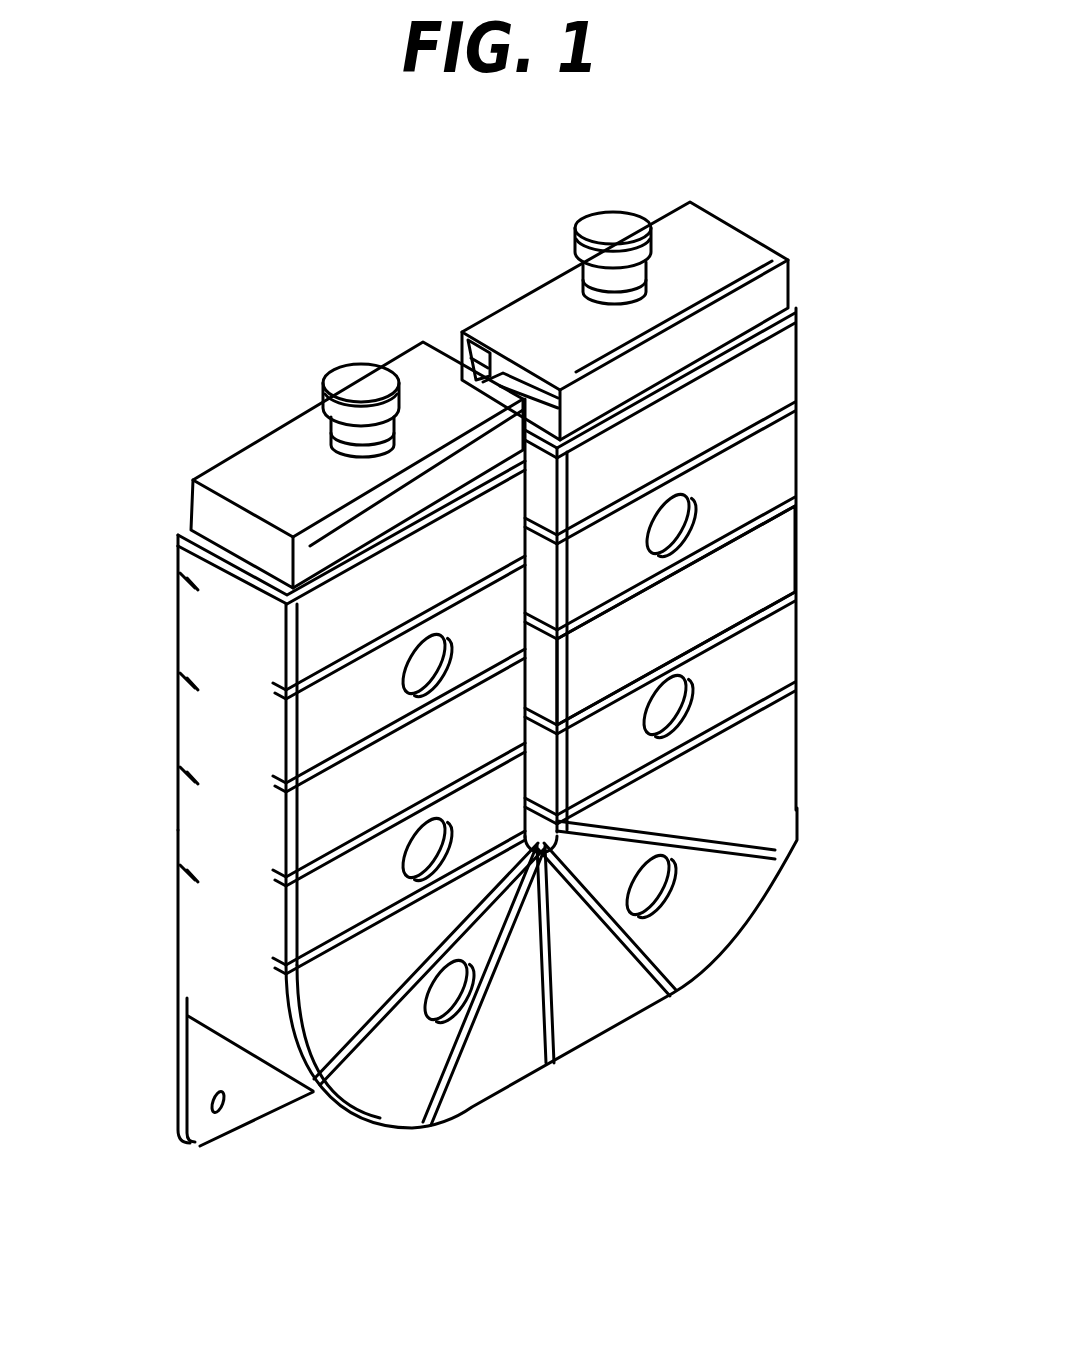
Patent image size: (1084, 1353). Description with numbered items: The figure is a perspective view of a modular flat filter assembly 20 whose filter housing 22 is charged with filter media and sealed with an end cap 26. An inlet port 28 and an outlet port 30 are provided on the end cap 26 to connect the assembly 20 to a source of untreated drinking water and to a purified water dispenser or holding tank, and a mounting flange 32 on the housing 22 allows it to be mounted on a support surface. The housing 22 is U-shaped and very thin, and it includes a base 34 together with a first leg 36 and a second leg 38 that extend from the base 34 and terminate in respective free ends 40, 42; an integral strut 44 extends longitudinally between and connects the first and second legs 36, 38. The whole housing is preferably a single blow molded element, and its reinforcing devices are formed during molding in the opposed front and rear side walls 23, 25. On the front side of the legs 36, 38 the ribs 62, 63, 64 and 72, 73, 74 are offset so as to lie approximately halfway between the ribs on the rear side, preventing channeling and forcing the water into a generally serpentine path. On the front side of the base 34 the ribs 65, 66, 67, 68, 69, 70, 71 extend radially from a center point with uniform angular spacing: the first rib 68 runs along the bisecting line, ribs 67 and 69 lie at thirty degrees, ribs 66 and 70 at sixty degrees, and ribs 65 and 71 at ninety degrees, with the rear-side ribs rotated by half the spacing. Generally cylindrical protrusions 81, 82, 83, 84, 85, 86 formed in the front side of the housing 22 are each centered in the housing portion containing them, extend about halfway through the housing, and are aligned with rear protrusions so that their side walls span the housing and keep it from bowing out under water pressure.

The modular flat filter assembly 20 is at (511, 679).
The filter housing 22 is at (666, 481).
The front side wall 23 is at (797, 549).
The rear side wall 25 is at (176, 712).
The end cap 26 is at (214, 476).
The inlet port 28 is at (322, 395).
The outlet port 30 is at (658, 216).
The mounting flange 32 is at (200, 1150).
The base 34 is at (482, 1103).
The first leg 36 is at (176, 831).
The second leg 38 is at (797, 355).
The free end 40 is at (176, 550).
The free end 42 is at (797, 304).
The integral strut 44 is at (466, 342).
The rib 62 is at (362, 653).
The rib 63 is at (379, 736).
The rib 64 is at (379, 835).
The rib 65 is at (381, 925).
The rib 66 is at (350, 1042).
The rib 67 is at (416, 1116).
The first rib 68 is at (552, 987).
The rib 69 is at (655, 988).
The rib 70 is at (760, 843).
The rib 71 is at (797, 682).
The rib 72 is at (797, 592).
The rib 73 is at (797, 503).
The rib 74 is at (797, 404).
The protrusion 81 is at (440, 642).
The protrusion 82 is at (441, 826).
The protrusion 83 is at (433, 1024).
The protrusion 84 is at (676, 895).
The protrusion 85 is at (650, 732).
The protrusion 86 is at (652, 546).